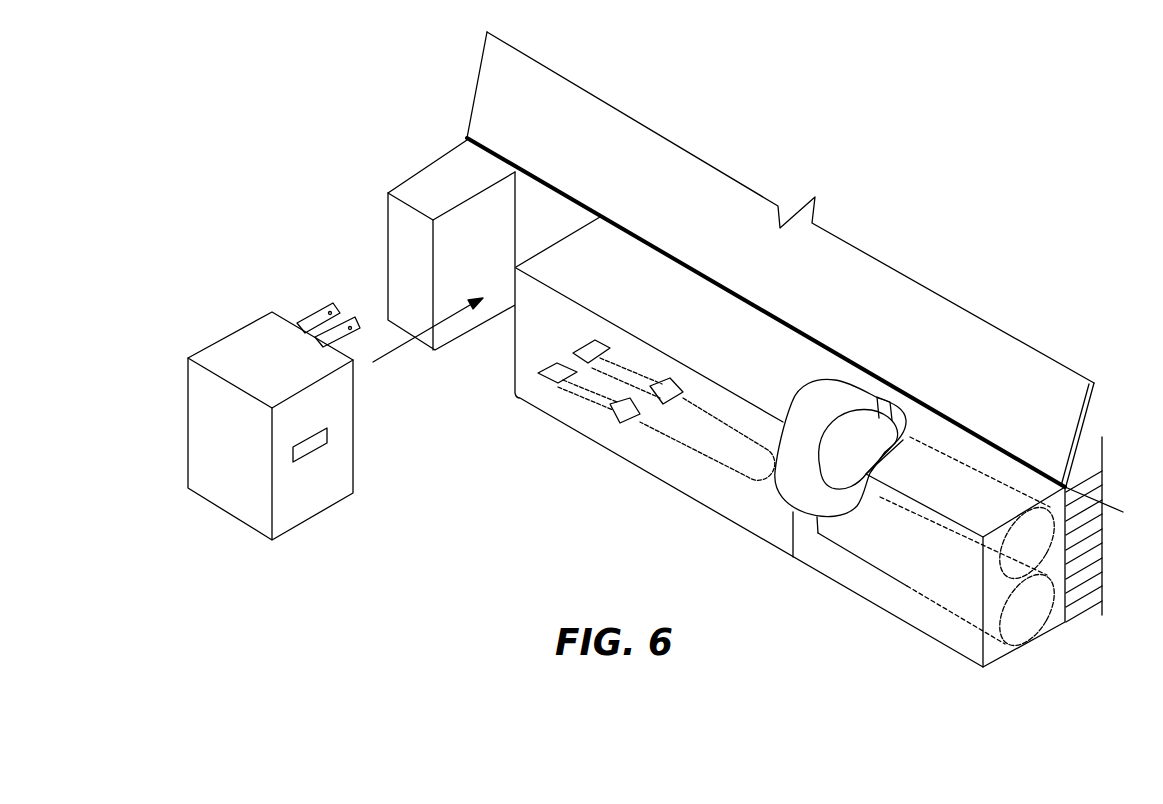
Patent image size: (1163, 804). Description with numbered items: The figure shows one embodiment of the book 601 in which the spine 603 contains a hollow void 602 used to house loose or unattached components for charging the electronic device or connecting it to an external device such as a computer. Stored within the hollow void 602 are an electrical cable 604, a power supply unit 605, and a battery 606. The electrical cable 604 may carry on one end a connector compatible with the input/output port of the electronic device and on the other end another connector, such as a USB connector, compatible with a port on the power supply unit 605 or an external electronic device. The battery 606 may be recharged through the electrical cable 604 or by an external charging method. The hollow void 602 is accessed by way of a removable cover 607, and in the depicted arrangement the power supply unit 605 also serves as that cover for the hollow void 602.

The book 601 is at (1082, 400).
The hollow void 602 is at (838, 383).
The spine 603 is at (1033, 637).
The electrical cable 604 is at (637, 355).
The power supply unit 605 is at (328, 433).
The battery 606 is at (908, 400).
The removable cover 607 is at (230, 333).